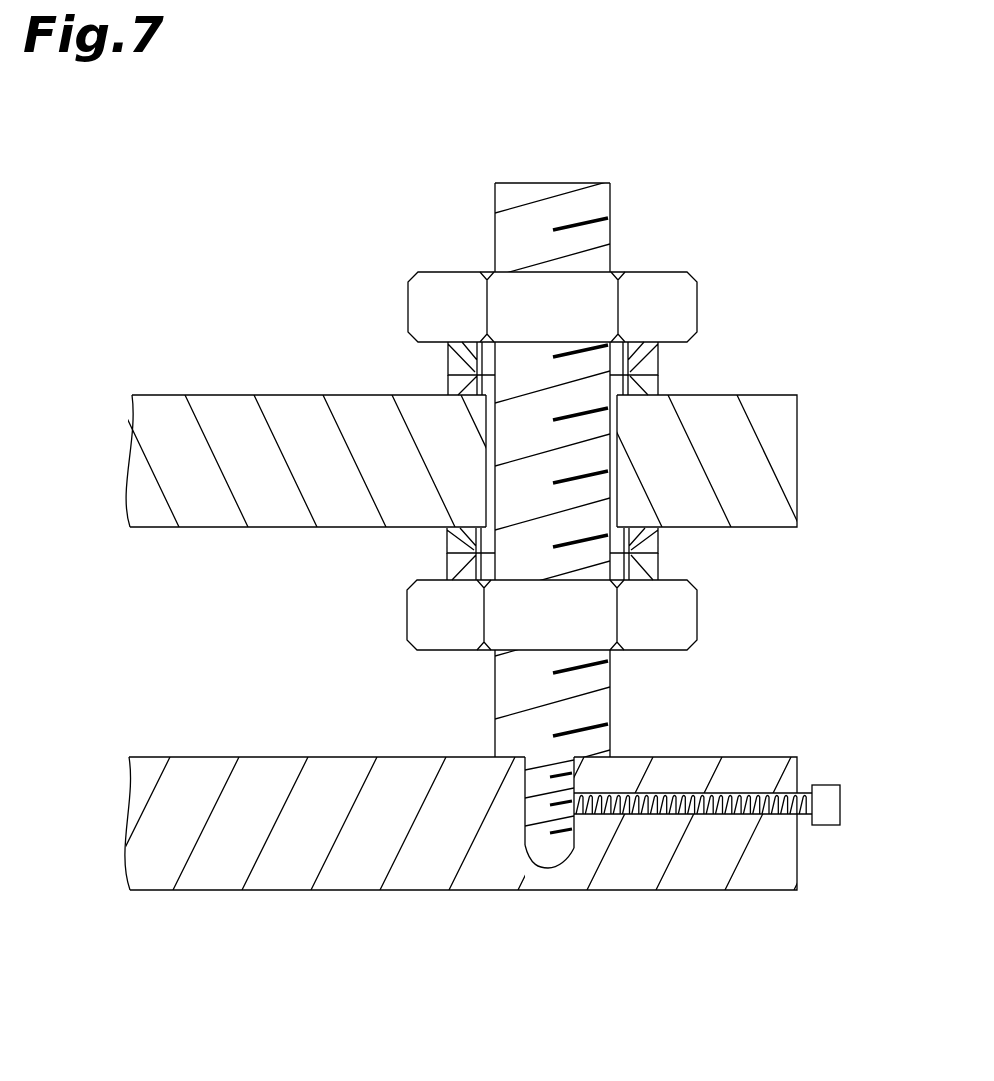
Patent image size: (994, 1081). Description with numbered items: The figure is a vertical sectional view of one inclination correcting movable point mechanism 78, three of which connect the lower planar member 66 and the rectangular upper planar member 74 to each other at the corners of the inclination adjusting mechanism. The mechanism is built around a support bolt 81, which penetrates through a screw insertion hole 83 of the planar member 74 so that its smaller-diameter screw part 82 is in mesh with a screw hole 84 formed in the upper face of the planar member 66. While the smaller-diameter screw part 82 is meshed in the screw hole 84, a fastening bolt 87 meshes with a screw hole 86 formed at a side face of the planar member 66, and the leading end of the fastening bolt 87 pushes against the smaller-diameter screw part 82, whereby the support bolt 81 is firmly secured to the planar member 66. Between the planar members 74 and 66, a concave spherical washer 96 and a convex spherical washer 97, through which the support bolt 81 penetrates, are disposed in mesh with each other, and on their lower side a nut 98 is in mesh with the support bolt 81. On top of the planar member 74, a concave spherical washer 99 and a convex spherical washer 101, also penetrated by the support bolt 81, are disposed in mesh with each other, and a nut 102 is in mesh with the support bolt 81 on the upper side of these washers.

The inclination correcting movable point mechanism 78 is at (264, 233).
The support bolt 81 is at (530, 183).
The nut 102 is at (687, 308).
The convex spherical washer 101 is at (657, 357).
The concave spherical washer 99 is at (658, 387).
The planar member 74 is at (250, 412).
The screw insertion hole 83 is at (492, 430).
The concave spherical washer 96 is at (447, 543).
The convex spherical washer 97 is at (447, 563).
The nut 98 is at (417, 628).
The planar member 66 is at (252, 770).
The smaller-diameter screw part 82 is at (526, 846).
The screw hole 84 is at (565, 852).
The screw hole 86 is at (730, 793).
The fastening bolt 87 is at (842, 803).